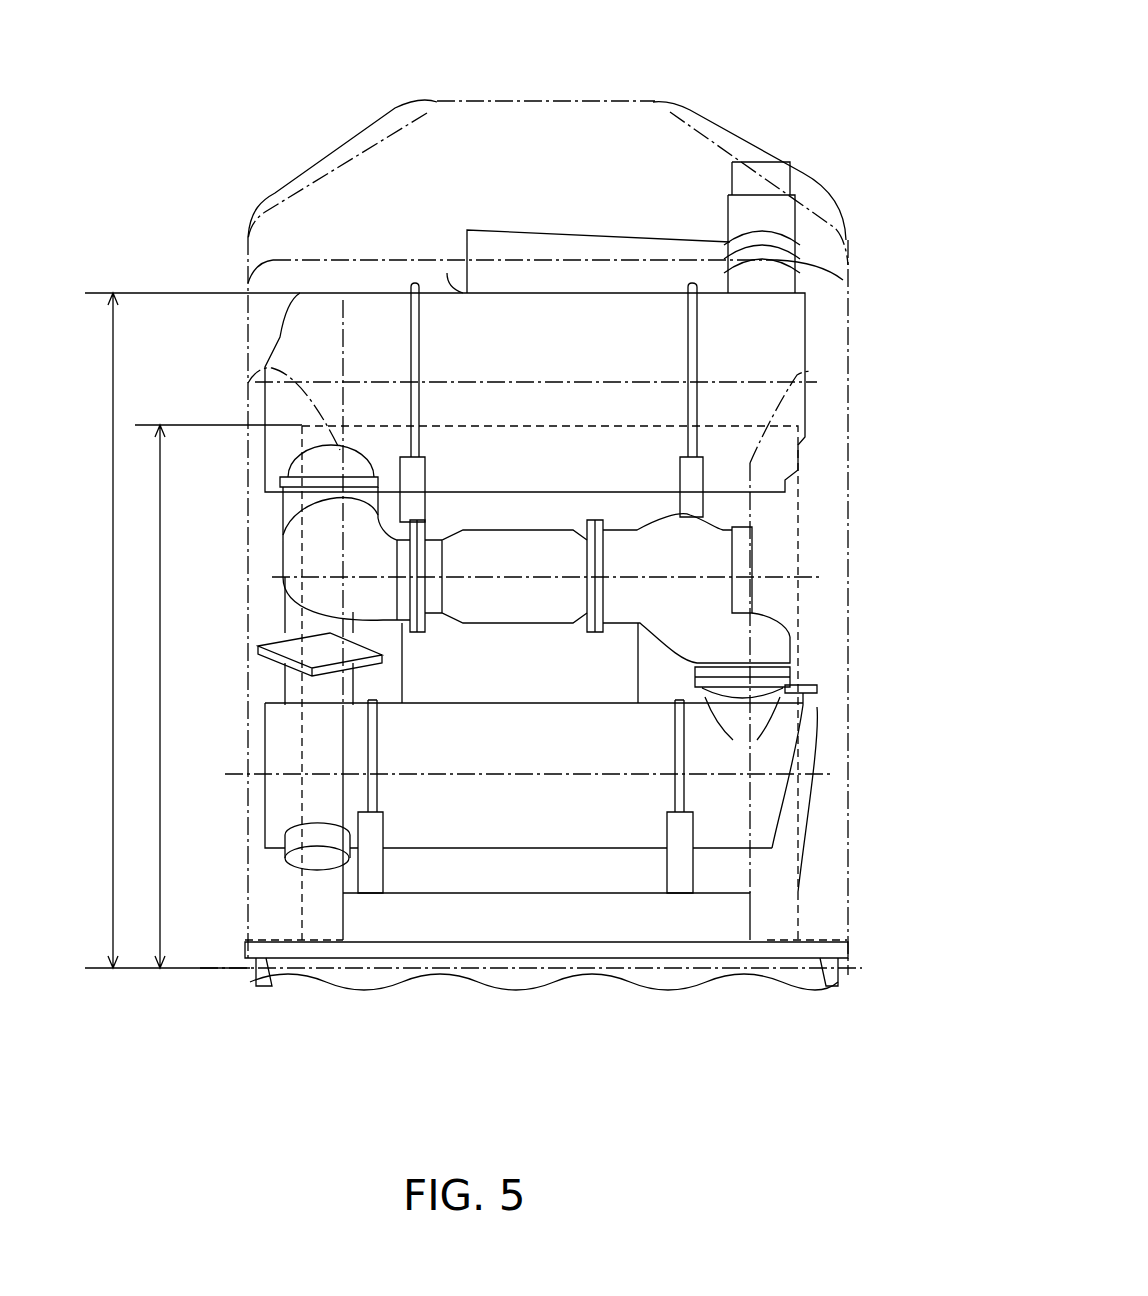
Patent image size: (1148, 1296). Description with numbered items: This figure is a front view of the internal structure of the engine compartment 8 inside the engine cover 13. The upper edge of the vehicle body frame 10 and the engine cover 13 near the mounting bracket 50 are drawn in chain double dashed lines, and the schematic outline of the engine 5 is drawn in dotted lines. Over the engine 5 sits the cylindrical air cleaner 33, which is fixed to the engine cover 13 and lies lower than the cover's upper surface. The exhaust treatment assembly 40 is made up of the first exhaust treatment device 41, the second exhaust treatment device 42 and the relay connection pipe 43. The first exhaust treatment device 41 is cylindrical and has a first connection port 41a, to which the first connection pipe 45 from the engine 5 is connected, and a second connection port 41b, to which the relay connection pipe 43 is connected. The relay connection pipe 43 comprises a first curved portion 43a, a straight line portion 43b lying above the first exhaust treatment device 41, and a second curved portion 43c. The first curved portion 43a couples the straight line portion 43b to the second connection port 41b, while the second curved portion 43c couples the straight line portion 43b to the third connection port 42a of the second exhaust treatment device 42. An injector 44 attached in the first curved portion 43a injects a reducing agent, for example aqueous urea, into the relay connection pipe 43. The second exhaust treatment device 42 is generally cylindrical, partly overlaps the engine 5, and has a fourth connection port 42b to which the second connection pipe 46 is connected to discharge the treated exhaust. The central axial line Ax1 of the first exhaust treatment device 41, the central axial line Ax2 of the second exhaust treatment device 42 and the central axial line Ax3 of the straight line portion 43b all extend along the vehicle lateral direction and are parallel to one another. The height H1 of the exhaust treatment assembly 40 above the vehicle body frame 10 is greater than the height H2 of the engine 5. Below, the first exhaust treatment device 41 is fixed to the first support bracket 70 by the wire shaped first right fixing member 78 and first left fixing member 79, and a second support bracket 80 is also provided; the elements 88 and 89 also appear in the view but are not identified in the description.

The engine 5 is at (302, 908).
The engine compartment 8 is at (517, 146).
The vehicle body frame 10 is at (840, 973).
The engine cover 13 is at (713, 110).
The air cleaner 33 is at (543, 238).
The exhaust treatment assembly 40 is at (369, 269).
The first exhaust treatment device 41 is at (745, 817).
The first connection port 41a is at (307, 684).
The second connection port 41b is at (792, 693).
The second exhaust treatment device 42 is at (775, 333).
The third connection port 42a is at (313, 460).
The fourth connection port 42b is at (790, 272).
The relay connection pipe 43 is at (730, 519).
The first curved portion 43a is at (770, 640).
The straight line portion 43b is at (290, 481).
The second curved portion 43c is at (313, 525).
The injector 44 is at (742, 543).
The first connection pipe 45 is at (302, 600).
The second connection pipe 46 is at (782, 212).
The mounting bracket 50 is at (680, 976).
The first support bracket 70 is at (717, 917).
The first right fixing member 78 is at (379, 790).
The first left fixing member 79 is at (672, 793).
The second support bracket 80 is at (697, 470).
The upper support rod 88 is at (412, 290).
The upper support rod 89 is at (692, 285).
The central axial line of the first exhaust treatment device Ax1 is at (830, 773).
The central axial line of the second exhaust treatment device Ax2 is at (830, 384).
The central axial line of the straight line portion Ax3 is at (830, 575).
The height of the exhaust treatment assembly H1 is at (190, 630).
The height of the engine H2 is at (216, 696).